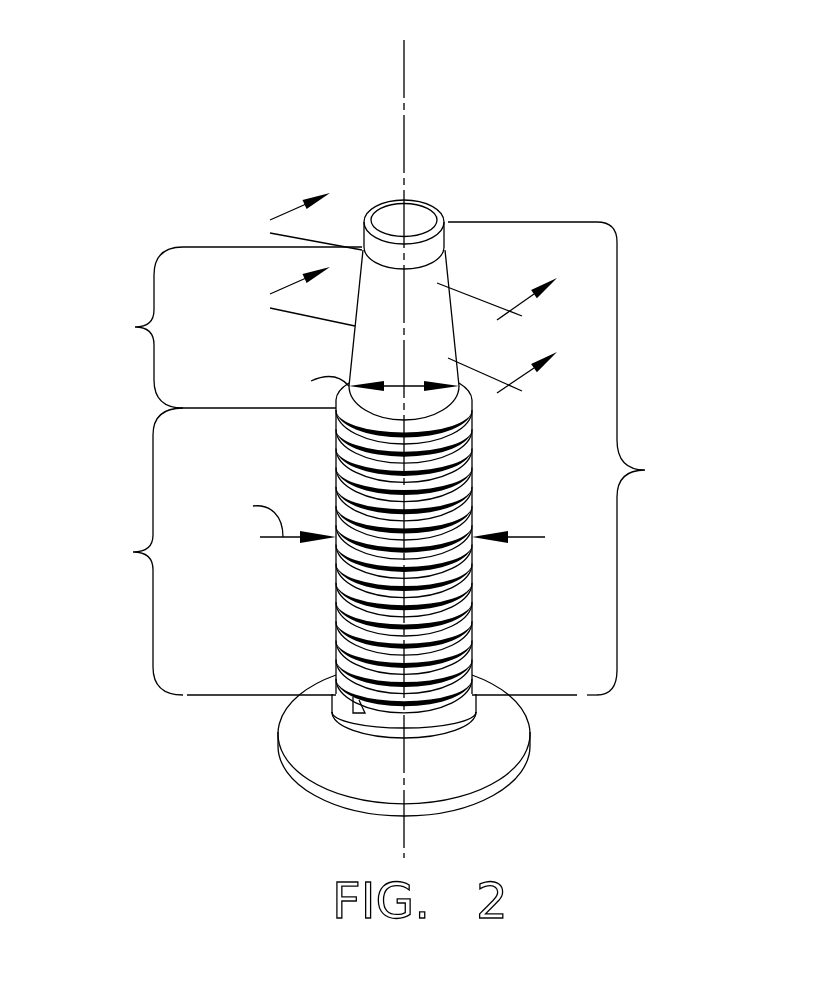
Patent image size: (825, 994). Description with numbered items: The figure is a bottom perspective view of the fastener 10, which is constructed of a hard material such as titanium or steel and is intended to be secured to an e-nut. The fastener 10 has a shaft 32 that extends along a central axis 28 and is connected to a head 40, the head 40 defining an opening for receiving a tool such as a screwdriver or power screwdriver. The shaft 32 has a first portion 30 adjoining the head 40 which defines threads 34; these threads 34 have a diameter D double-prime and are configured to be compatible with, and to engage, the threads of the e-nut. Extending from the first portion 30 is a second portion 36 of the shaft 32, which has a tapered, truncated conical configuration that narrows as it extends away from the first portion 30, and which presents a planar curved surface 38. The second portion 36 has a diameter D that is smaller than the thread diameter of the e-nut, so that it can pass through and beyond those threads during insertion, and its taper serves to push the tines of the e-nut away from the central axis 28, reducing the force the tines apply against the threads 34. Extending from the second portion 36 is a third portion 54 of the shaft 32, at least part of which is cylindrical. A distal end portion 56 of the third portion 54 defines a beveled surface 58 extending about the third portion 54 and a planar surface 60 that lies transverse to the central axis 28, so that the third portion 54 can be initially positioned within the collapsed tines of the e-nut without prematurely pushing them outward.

The fastener 10 is at (665, 328).
The central axis 28 is at (403, 72).
The first portion 30 is at (134, 552).
The shaft 32 is at (646, 468).
The threads 34 is at (381, 572).
The second portion 36 is at (136, 328).
The planar curved surface 38 is at (372, 331).
The head 40 is at (500, 765).
The third portion 54 is at (416, 182).
The distal end portion 56 is at (447, 200).
The beveled surface 58 is at (364, 220).
The planar surface 60 is at (420, 212).